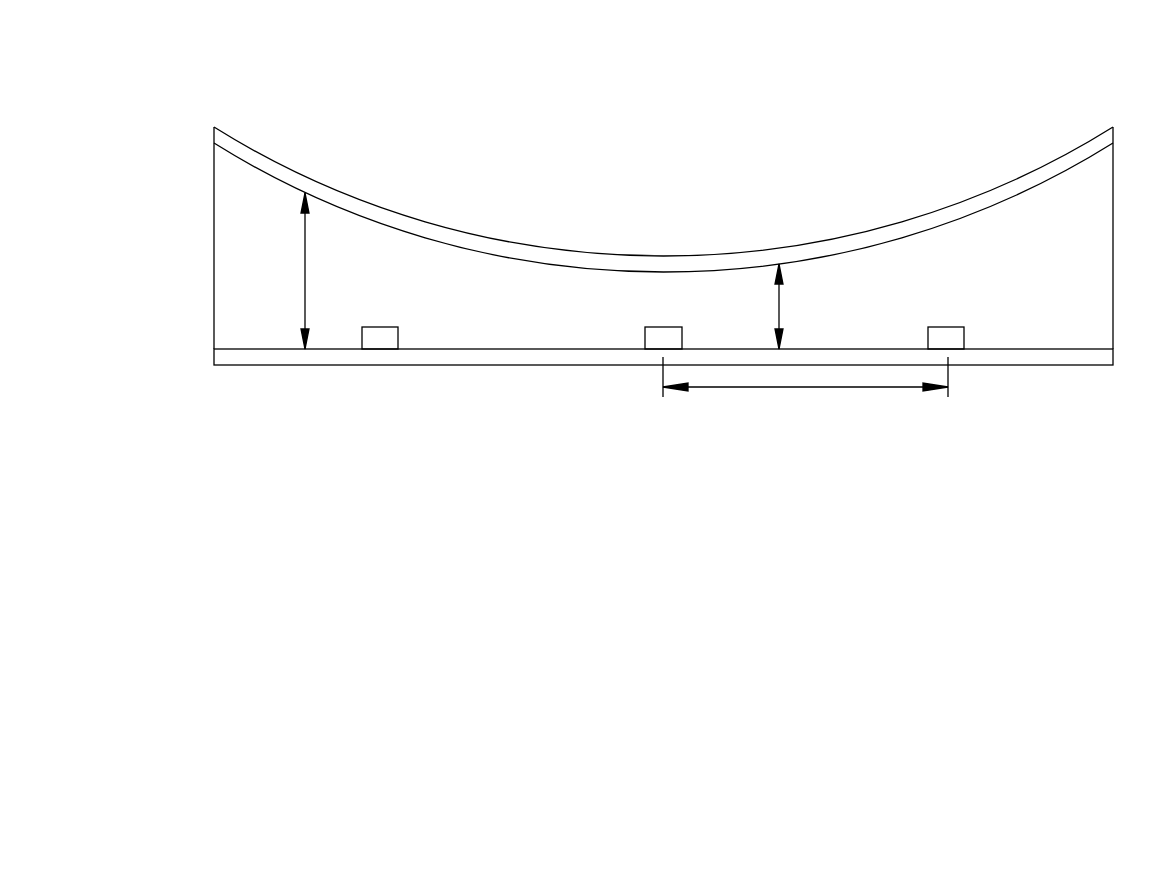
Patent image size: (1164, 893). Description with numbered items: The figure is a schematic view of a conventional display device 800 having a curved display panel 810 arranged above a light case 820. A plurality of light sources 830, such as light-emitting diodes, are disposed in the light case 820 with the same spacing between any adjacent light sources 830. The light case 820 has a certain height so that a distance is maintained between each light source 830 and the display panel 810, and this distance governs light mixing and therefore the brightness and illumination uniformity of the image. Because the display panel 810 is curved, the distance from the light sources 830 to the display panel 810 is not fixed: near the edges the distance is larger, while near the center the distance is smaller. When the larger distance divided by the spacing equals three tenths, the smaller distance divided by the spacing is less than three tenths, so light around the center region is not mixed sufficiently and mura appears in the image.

The display device 800 is at (288, 91).
The display panel 810 is at (1037, 178).
The light case 820 is at (214, 303).
The light source 830 is at (945, 335).